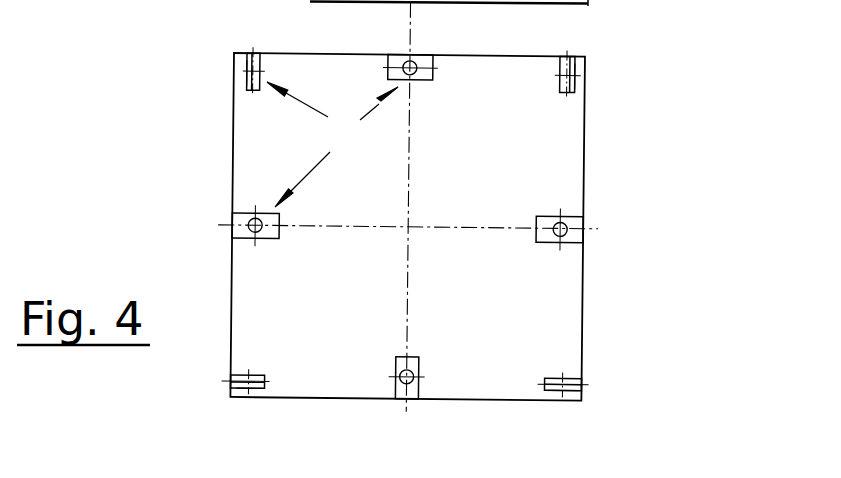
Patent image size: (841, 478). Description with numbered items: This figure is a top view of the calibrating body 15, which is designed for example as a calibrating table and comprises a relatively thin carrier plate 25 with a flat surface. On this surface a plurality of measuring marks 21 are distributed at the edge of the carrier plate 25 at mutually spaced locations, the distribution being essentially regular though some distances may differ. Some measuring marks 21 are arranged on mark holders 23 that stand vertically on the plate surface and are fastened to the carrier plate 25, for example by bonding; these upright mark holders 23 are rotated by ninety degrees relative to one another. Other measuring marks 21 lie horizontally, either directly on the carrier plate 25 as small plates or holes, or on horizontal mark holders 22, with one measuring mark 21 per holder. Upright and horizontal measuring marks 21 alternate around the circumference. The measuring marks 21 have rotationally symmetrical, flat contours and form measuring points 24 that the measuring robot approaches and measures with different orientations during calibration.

The calibrating body 15 is at (496, 207).
The carrier plate 25 is at (540, 143).
The measuring marks 21 is at (234, 212).
The horizontal mark holders 22 is at (575, 237).
The mark holders 23 is at (236, 53).
The measuring points 24 is at (332, 144).